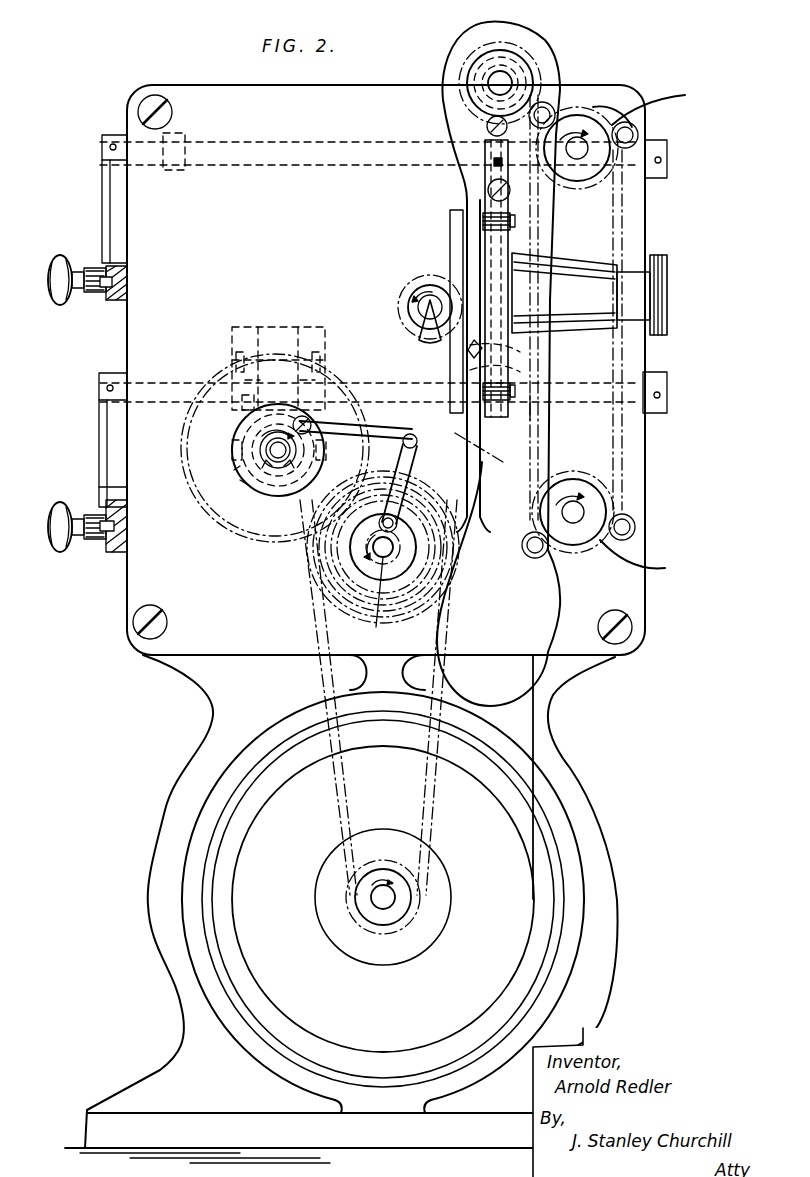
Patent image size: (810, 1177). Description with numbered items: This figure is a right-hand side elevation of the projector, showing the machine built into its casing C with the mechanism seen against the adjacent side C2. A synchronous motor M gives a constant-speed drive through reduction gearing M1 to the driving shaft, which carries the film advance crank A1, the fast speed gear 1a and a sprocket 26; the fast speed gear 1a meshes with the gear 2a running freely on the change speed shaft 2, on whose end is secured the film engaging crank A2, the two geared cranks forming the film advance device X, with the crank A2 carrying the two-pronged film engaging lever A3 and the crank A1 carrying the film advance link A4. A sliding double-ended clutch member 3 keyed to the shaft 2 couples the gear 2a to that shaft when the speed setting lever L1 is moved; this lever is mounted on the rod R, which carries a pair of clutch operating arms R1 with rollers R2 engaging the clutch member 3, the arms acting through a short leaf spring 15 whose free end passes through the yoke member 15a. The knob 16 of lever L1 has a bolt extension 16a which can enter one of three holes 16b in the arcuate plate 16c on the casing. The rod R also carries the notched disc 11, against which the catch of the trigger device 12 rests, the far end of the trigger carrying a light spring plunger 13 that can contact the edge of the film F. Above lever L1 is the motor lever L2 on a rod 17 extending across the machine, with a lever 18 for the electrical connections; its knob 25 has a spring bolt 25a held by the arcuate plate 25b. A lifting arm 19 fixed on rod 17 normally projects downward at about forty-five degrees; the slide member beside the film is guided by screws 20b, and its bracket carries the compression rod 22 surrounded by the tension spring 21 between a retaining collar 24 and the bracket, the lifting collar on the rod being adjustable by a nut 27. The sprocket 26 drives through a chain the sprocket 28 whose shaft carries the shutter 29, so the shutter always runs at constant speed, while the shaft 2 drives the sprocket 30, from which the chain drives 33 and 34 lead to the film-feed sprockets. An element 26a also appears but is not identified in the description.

The casing C is at (190, 85).
The adjacent side of the machine C2 is at (137, 348).
The film F is at (452, 60).
The motor M is at (218, 902).
The reduction gearing M1 is at (423, 805).
The rod 17 is at (262, 158).
The lever 18 is at (174, 170).
The speed setting lever L1 is at (105, 460).
The motor lever L2 is at (107, 223).
The knob 25 is at (57, 305).
The spring bolt 25a is at (128, 283).
The arcuate plate 25b is at (117, 297).
The knob 16 is at (60, 553).
The bolt 16a is at (128, 534).
The holes 16b is at (116, 530).
The arcuate plate 16c is at (115, 552).
The change speed shaft 2 is at (270, 442).
The fast speed gear 2a is at (183, 470).
The clutch member 3 is at (278, 497).
The sprocket 30 is at (256, 485).
The rod R is at (172, 380).
The clutch operating arms R1 is at (233, 355).
The rollers R2 is at (243, 452).
The film engaging crank A2 is at (255, 470).
The film engaging lever A3 is at (470, 420).
The film advance link A4 is at (432, 484).
The film advance crank A1 is at (400, 557).
The film advance device X is at (397, 484).
The leaf spring 15 is at (280, 328).
The yoke member 15a is at (258, 328).
The sprocket 26 is at (340, 562).
The upper pulley 26a is at (533, 78).
The fast speed gear 1a is at (350, 580).
The sprocket 28 is at (425, 276).
The shutter 29 is at (428, 305).
The lifting arm 19 is at (490, 150).
The compression rod 22 is at (494, 162).
The nut 27 is at (493, 182).
The guide screws 20b is at (512, 195).
The tension spring 21 is at (527, 262).
The trigger device 12 is at (468, 358).
The spring plunger 13 is at (516, 352).
The retaining collar 24 is at (495, 368).
The disc 11 is at (531, 412).
The chain drive 33 is at (613, 433).
The chain drive 34 is at (590, 106).